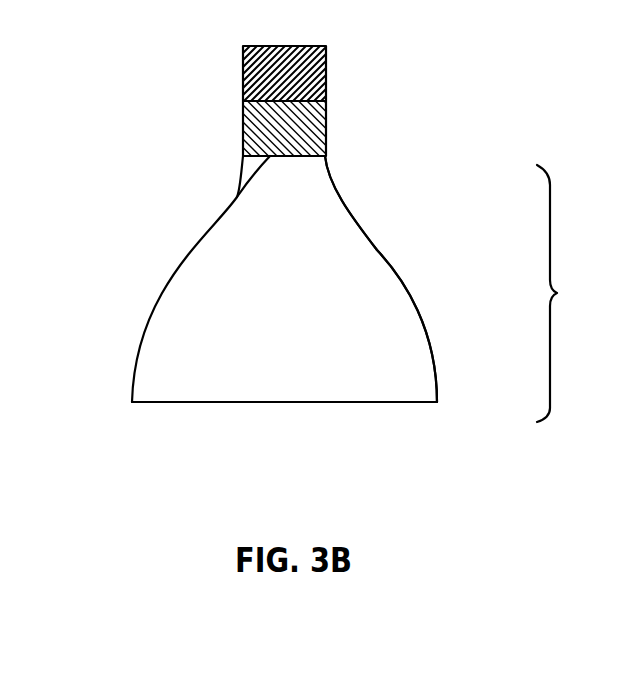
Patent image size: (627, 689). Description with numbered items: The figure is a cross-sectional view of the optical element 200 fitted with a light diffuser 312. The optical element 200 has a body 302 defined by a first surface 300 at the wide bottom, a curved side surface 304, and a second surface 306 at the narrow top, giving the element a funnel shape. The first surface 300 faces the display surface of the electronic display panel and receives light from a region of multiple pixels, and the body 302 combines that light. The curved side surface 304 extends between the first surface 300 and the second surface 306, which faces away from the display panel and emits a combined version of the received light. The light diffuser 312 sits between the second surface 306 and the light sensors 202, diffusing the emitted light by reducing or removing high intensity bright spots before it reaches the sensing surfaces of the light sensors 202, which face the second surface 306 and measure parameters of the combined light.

The optical element 200 is at (571, 293).
The light sensors 202 is at (283, 74).
The first surface 300 is at (182, 402).
The body 302 is at (297, 349).
The side surface 304 is at (512, 350).
The second surface 306 is at (238, 197).
The light diffuser 312 is at (284, 130).